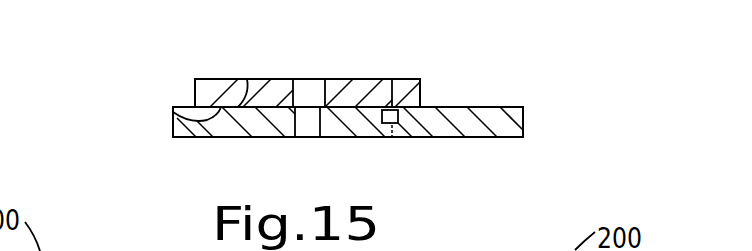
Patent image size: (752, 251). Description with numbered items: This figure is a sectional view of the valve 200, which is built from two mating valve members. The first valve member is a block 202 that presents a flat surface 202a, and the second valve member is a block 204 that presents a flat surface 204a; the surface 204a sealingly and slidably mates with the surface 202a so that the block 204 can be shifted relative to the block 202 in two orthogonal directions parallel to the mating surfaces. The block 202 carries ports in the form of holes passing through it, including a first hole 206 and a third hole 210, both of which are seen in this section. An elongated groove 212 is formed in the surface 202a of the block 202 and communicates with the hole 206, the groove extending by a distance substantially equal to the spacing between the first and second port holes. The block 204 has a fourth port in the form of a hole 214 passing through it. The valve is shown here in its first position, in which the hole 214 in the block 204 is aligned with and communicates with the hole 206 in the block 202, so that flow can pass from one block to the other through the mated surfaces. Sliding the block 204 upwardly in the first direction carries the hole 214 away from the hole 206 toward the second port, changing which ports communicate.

The valve 200 is at (136, 60).
The block 202 is at (481, 116).
The flat surface 202a is at (176, 117).
The block 204 is at (419, 80).
The flat surface 204a is at (247, 79).
The hole 206 is at (307, 137).
The hole 210 is at (392, 137).
The groove 212 is at (392, 79).
The hole 214 is at (305, 79).